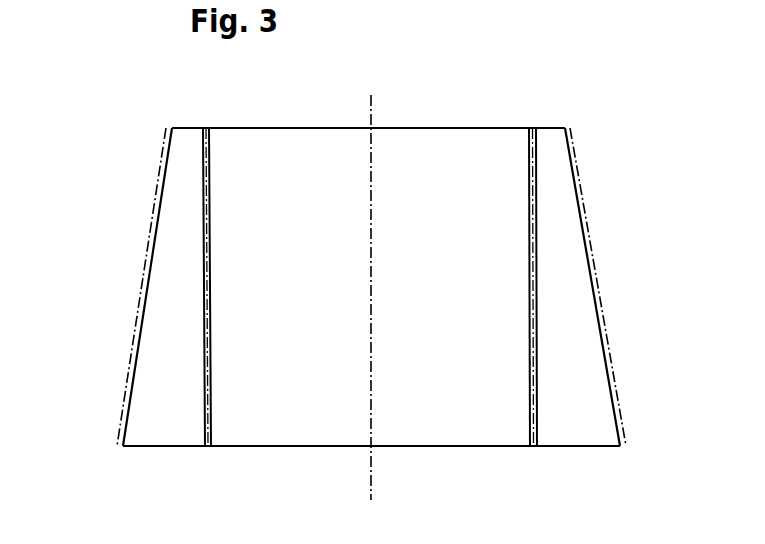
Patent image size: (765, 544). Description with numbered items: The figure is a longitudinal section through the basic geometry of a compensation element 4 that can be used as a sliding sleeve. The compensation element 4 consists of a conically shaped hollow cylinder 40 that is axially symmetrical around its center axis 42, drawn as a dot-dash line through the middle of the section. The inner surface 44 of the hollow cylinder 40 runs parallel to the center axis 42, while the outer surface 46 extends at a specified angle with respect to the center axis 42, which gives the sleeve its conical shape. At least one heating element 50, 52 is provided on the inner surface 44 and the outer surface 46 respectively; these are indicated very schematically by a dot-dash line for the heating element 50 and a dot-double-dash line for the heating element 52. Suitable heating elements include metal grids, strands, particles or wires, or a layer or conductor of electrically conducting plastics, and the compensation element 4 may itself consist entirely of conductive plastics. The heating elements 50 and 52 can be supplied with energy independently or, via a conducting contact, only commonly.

The compensation element 4 is at (91, 248).
The conically shaped hollow cylinder 40 is at (165, 318).
The center axis 42 is at (372, 107).
The inner surface 44 is at (536, 203).
The outer surface 46 is at (597, 267).
The heating element 50 is at (205, 372).
The heating element 52 is at (122, 393).